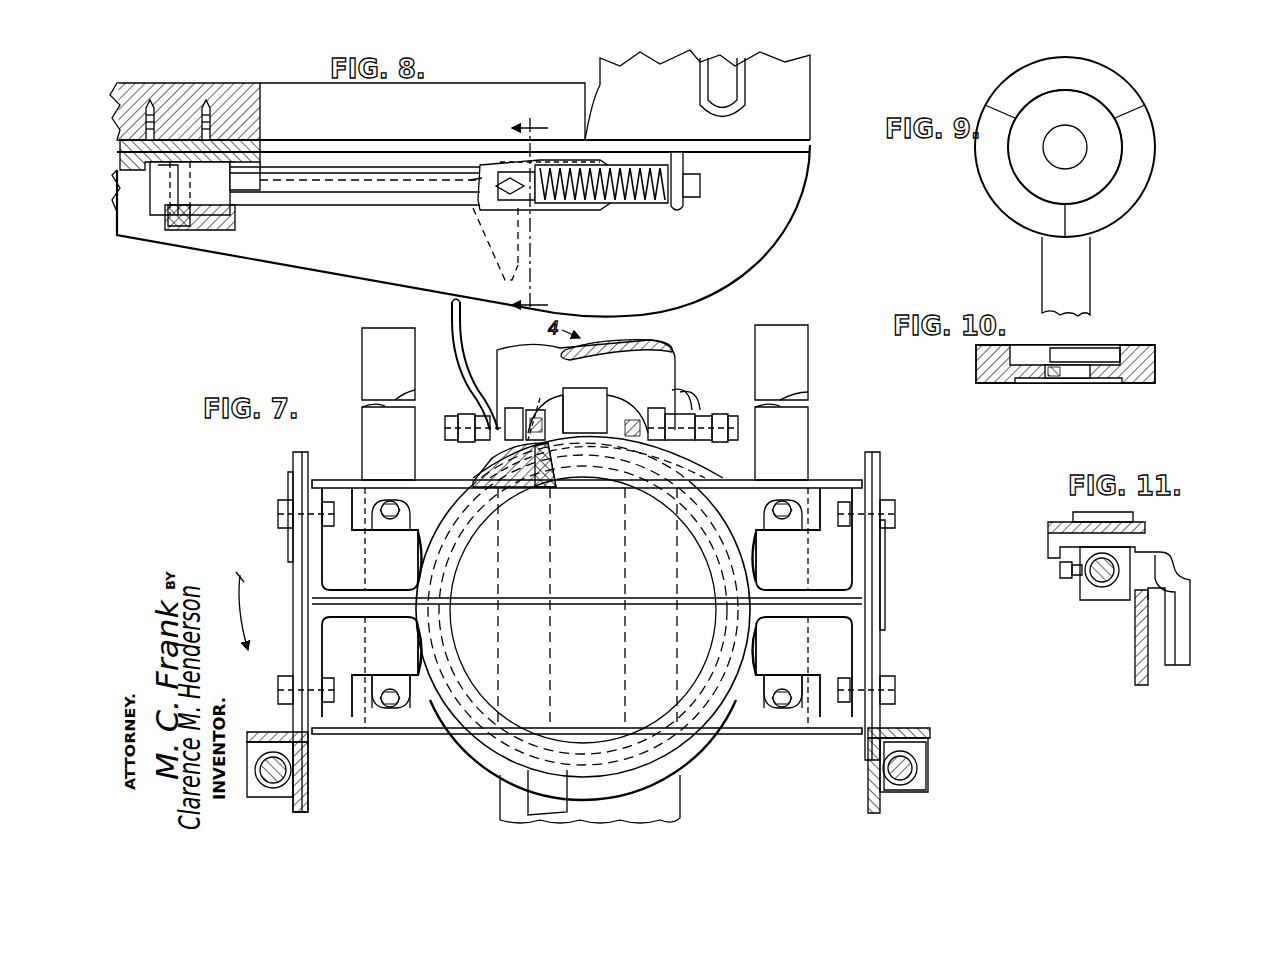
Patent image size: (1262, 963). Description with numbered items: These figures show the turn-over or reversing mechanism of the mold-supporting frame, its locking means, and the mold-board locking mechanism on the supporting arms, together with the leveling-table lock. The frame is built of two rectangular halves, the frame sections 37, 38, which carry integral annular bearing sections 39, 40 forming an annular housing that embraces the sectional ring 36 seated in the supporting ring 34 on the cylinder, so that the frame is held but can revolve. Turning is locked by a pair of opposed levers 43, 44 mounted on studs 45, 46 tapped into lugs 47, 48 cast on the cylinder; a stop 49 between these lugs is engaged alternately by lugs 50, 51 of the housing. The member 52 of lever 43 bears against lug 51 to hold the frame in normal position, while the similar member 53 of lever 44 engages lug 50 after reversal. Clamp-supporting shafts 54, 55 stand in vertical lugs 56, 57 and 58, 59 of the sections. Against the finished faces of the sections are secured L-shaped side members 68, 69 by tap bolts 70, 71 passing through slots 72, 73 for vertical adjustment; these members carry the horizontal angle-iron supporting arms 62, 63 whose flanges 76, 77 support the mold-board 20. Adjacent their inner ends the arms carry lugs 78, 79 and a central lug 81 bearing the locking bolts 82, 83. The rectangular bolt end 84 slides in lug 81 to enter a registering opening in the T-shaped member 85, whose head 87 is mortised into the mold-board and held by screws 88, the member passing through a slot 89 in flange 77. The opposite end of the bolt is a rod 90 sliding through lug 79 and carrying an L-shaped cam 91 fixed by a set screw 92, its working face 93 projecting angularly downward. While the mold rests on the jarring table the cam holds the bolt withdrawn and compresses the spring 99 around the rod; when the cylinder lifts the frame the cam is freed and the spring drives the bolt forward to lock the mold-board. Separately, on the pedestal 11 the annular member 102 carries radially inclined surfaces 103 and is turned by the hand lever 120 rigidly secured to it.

In FIG. 8, the pedestal 11 is at (530, 213).
In FIG. 8, the mold-board 20 is at (140, 84).
In FIG. 7, the supporting ring 34 is at (556, 488).
In FIG. 7, the sectional ring 36 is at (522, 488).
In FIG. 7, the frame section 37 is at (430, 734).
In FIG. 7, the frame section 38 is at (344, 478).
In FIG. 7, the annular bearing section 39 is at (692, 740).
In FIG. 7, the annular bearing section 40 is at (698, 468).
In FIG. 7, the lever 43 is at (462, 338).
In FIG. 7, the lever 44 is at (712, 396).
In FIG. 7, the stud 45 is at (446, 416).
In FIG. 7, the stud 46 is at (735, 414).
In FIG. 7, the lug 47 is at (542, 398).
In FIG. 7, the lug 48 is at (630, 410).
In FIG. 7, the stop 49 is at (594, 388).
In FIG. 7, the lug 50 is at (590, 796).
In FIG. 7, the lug 51 is at (555, 402).
In FIG. 7, the member 52 is at (515, 408).
In FIG. 7, the member 53 is at (672, 362).
In FIG. 7, the clamp-supporting shaft 54 is at (362, 352).
In FIG. 7, the clamp-supporting shaft 55 is at (810, 345).
In FIG. 7, the lug 56 is at (368, 680).
In FIG. 7, the lug 57 is at (360, 522).
In FIG. 7, the lug 58 is at (802, 680).
In FIG. 7, the lug 59 is at (798, 522).
In FIG. 7, the supporting arm 62 is at (318, 770).
In FIG. 8, the supporting arm 63 is at (312, 262).
In FIG. 7, the supporting arm 63 is at (862, 778).
In FIG. 11, the supporting arm 63 is at (1126, 628).
In FIG. 7, the L-shaped side member 68 is at (292, 580).
In FIG. 8, the L-shaped side member 69 is at (812, 75).
In FIG. 7, the L-shaped side member 69 is at (882, 582).
In FIG. 7, the tap bolt 70 is at (278, 514).
In FIG. 7, the tap bolt 71 is at (897, 514).
In FIG. 7, the slot 72 is at (288, 540).
In FIG. 7, the slot 73 is at (887, 542).
In FIG. 7, the flange 76 is at (270, 732).
In FIG. 8, the flange 77 is at (340, 140).
In FIG. 7, the flange 77 is at (908, 728).
In FIG. 11, the flange 77 is at (1062, 522).
In FIG. 7, the lug 78 is at (258, 785).
In FIG. 8, the lug 79 is at (679, 213).
In FIG. 7, the lug 79 is at (928, 788).
In FIG. 8, the lug 81 is at (212, 230).
In FIG. 7, the locking bolt 82 is at (272, 784).
In FIG. 8, the locking bolt 83 is at (325, 190).
In FIG. 7, the locking bolt 83 is at (916, 762).
In FIG. 11, the locking bolt 83 is at (1092, 578).
In FIG. 8, the bolt end 84 is at (160, 210).
In FIG. 8, the T-shaped member 85 is at (170, 228).
In FIG. 8, the head 87 is at (192, 140).
In FIG. 8, the screw 88 is at (210, 125).
In FIG. 8, the slot 89 is at (125, 168).
In FIG. 8, the rod 90 is at (702, 182).
In FIG. 8, the cam 91 is at (492, 246).
In FIG. 11, the cam 91 is at (1198, 600).
In FIG. 8, the set screw 92 is at (495, 195).
In FIG. 11, the set screw 92 is at (1060, 570).
In FIG. 8, the working face 93 is at (490, 230).
In FIG. 8, the spring 99 is at (630, 205).
In FIG. 11, the spring 99 is at (1090, 585).
In FIG. 9, the annular member 102 is at (1157, 147).
In FIG. 10, the annular member 102 is at (1157, 364).
In FIG. 9, the inclined surface 103 is at (1000, 190).
In FIG. 10, the inclined surface 103 is at (1090, 348).
In FIG. 9, the hand lever 120 is at (1090, 268).